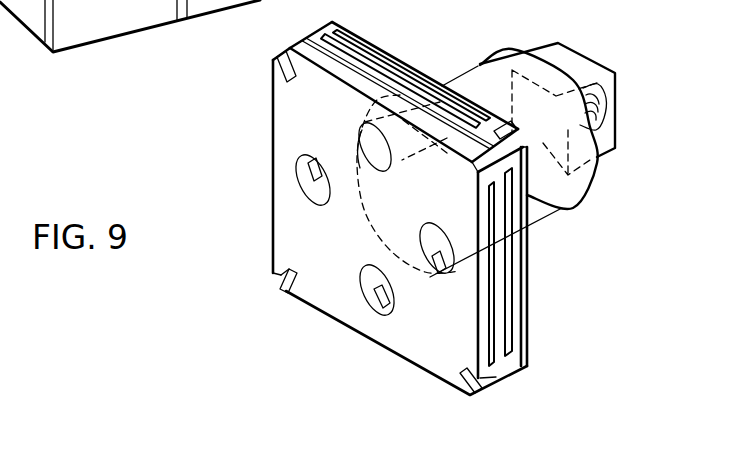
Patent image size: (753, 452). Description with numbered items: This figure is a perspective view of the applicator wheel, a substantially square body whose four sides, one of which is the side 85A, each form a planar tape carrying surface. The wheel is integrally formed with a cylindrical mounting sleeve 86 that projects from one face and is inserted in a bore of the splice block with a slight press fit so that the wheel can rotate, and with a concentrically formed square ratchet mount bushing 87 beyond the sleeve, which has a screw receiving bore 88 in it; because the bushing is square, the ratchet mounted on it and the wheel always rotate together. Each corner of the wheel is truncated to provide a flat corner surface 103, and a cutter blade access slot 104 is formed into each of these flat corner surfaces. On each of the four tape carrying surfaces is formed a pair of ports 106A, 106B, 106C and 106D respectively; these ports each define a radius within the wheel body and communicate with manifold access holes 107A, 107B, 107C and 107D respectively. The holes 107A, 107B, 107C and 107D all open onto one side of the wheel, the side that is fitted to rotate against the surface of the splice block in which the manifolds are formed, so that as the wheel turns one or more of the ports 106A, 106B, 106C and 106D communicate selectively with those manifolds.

The side of applicator wheel 85A is at (527, 272).
The cylindrical mounting sleeve 86 is at (500, 62).
The square ratchet mount bushing 87 is at (568, 54).
The screw receiving bore 88 is at (608, 114).
The flat corner surface 103 is at (300, 19).
The cutter blade access slot 104 is at (280, 55).
The ports 106A is at (492, 320).
The ports 106B is at (377, 312).
The ports 106C is at (312, 158).
The ports 106D is at (347, 63).
The manifold access hole 107A is at (440, 268).
The manifold access hole 107B is at (358, 288).
The manifold access hole 107C is at (312, 172).
The manifold access hole 107D is at (360, 128).